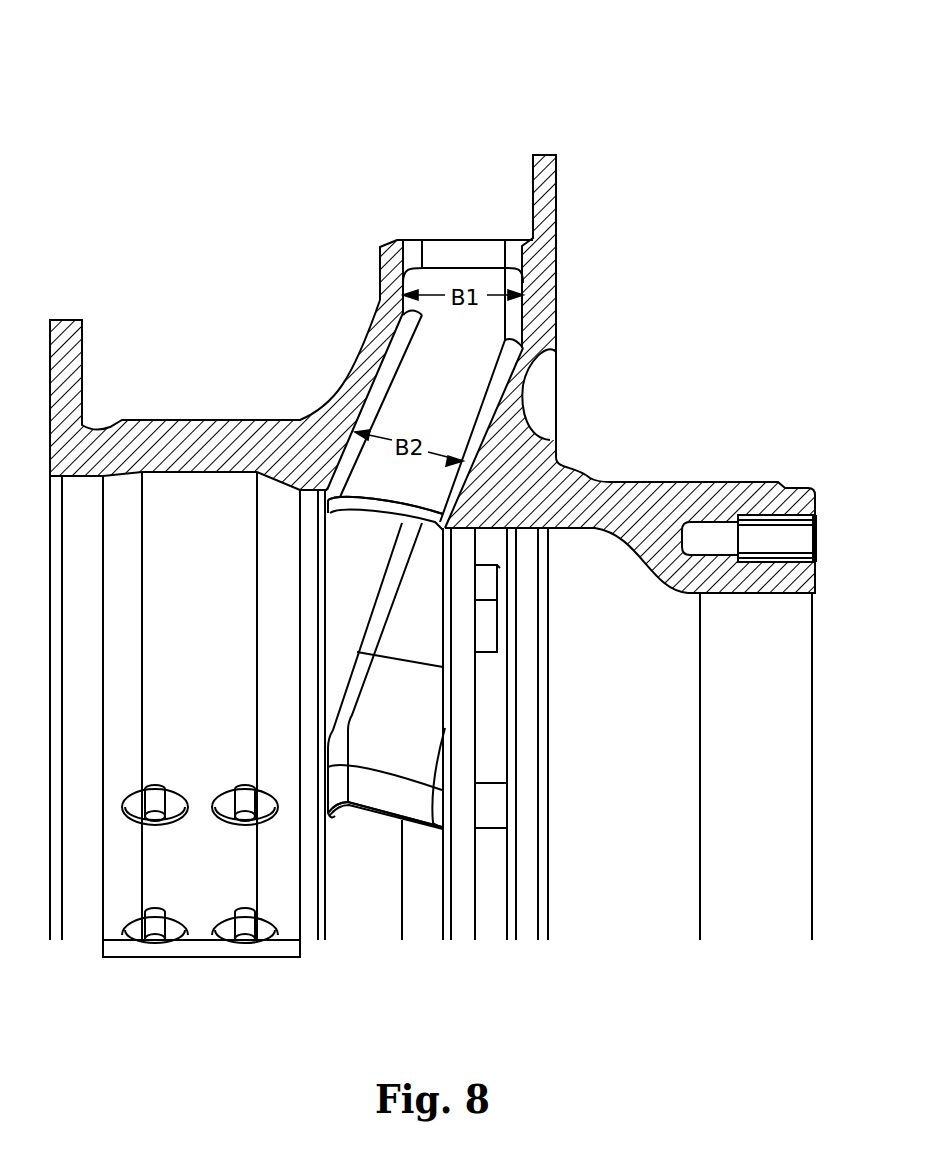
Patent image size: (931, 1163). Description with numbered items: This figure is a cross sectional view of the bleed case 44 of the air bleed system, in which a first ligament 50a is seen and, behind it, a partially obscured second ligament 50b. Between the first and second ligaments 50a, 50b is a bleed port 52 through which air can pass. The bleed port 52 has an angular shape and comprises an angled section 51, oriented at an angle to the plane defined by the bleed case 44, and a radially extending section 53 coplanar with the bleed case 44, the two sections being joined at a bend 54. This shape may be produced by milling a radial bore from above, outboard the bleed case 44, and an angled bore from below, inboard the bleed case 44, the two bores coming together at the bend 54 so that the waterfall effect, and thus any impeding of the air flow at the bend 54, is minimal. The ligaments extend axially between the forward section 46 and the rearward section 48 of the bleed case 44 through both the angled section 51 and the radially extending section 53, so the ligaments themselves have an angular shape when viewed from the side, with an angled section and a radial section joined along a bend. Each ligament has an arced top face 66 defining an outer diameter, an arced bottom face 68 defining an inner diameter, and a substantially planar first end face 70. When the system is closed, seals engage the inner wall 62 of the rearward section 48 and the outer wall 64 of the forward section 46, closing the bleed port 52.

The bleed case 44 is at (676, 148).
The forward section 46 is at (202, 420).
The rearward section 48 is at (698, 482).
The first ligament 50a is at (527, 440).
The second ligament 50b is at (415, 711).
The angled section 51 is at (530, 387).
The bleed port 52 is at (388, 742).
The radially extending section 53 is at (556, 292).
The bend 54 is at (545, 343).
The inner wall 62 is at (532, 173).
The outer wall 64 is at (382, 255).
The arced top face 66 is at (463, 240).
The arced bottom face 68 is at (378, 513).
The first substantially planar end face 70 is at (430, 483).